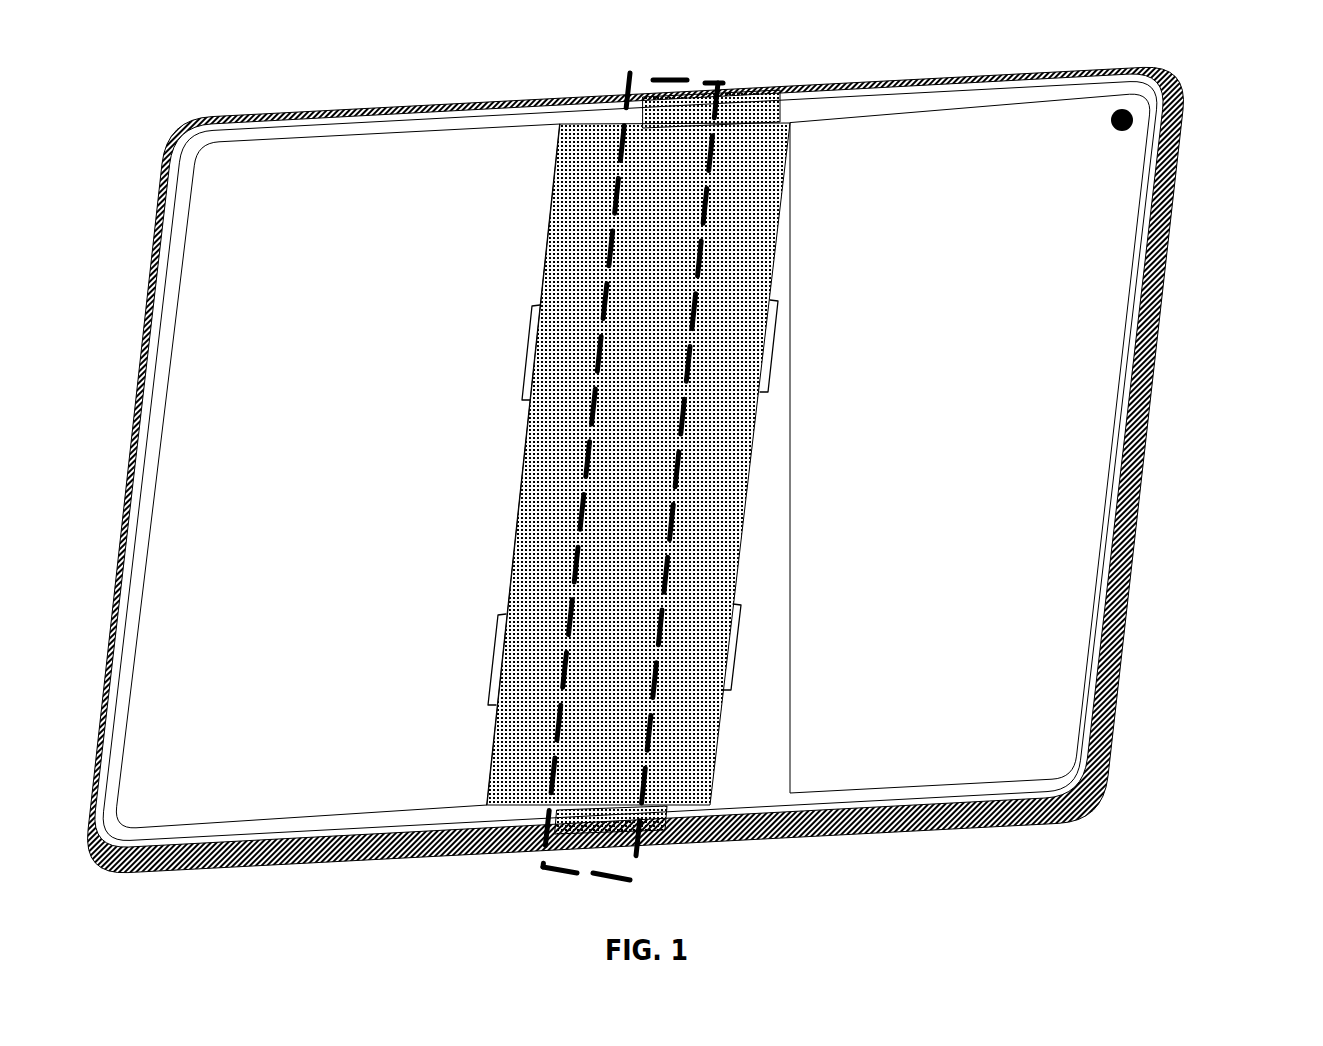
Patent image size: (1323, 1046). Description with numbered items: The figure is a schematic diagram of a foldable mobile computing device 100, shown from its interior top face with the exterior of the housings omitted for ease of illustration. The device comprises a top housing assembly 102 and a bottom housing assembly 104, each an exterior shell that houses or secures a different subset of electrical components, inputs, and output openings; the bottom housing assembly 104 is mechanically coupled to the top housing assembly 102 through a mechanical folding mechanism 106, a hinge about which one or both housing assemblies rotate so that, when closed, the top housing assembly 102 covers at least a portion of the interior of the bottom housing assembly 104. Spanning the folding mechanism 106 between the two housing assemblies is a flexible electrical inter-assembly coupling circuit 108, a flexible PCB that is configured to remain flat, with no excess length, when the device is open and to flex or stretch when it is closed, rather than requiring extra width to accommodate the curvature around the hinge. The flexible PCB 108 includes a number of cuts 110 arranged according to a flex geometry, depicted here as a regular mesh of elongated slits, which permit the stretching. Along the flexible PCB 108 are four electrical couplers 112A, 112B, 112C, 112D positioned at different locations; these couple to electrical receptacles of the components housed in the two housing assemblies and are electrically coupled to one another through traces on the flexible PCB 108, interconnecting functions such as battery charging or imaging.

The foldable mobile computing device 100 is at (1227, 97).
The top housing assembly 102 is at (936, 333).
The bottom housing assembly 104 is at (412, 332).
The mechanical folding mechanism 106 is at (670, 74).
The flexible electrical inter-assembly coupling circuit 108 is at (775, 171).
The cuts 110 is at (596, 228).
The electrical coupler 112A is at (535, 352).
The electrical coupler 112B is at (764, 380).
The electrical coupler 112C is at (498, 668).
The electrical coupler 112D is at (728, 658).